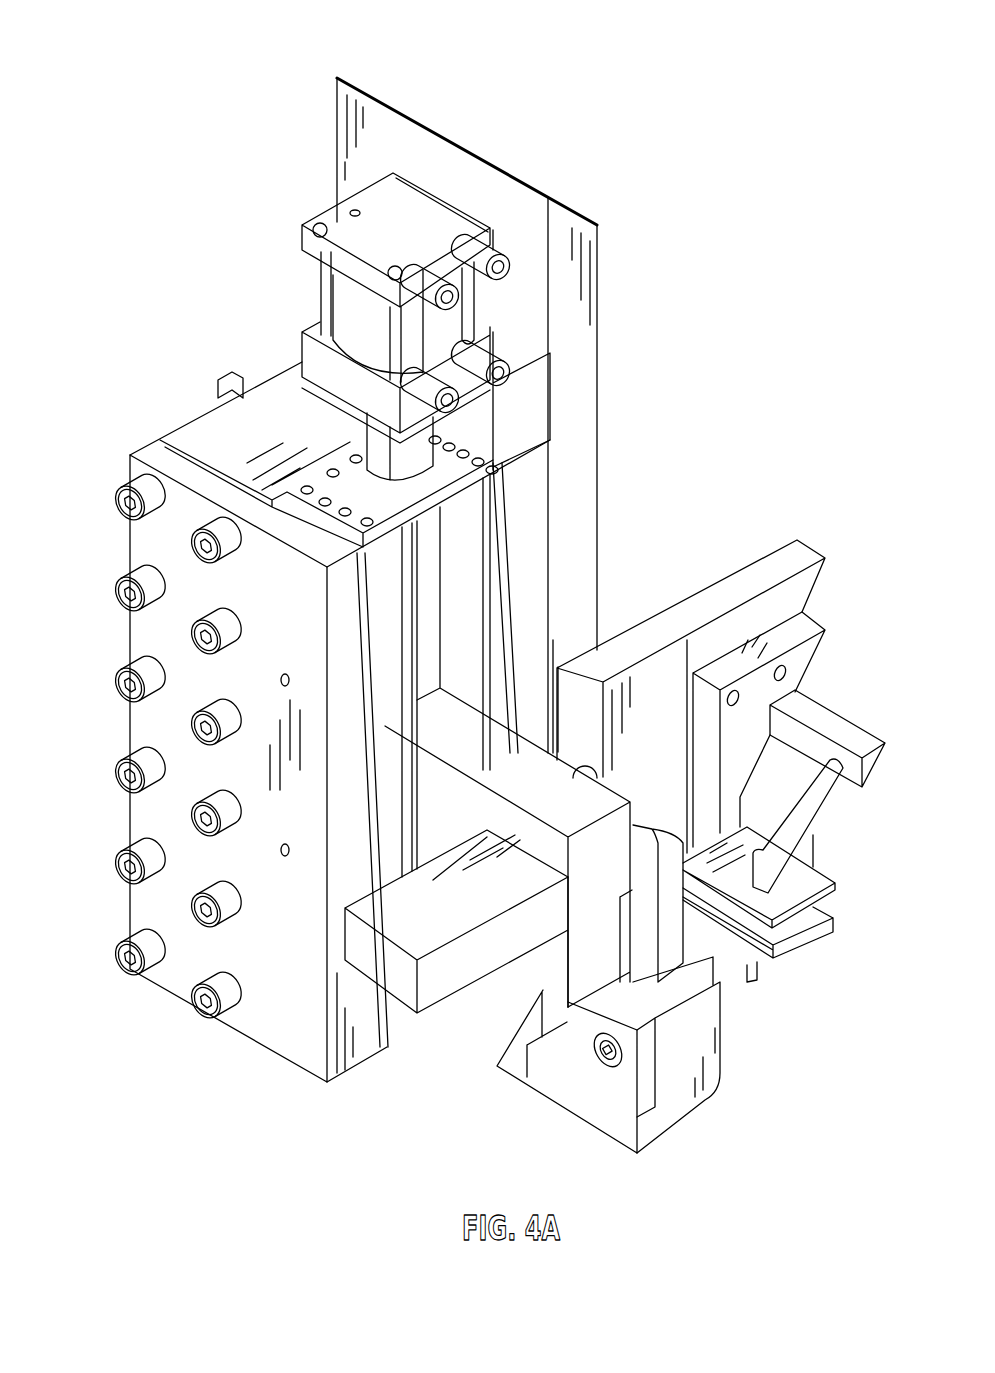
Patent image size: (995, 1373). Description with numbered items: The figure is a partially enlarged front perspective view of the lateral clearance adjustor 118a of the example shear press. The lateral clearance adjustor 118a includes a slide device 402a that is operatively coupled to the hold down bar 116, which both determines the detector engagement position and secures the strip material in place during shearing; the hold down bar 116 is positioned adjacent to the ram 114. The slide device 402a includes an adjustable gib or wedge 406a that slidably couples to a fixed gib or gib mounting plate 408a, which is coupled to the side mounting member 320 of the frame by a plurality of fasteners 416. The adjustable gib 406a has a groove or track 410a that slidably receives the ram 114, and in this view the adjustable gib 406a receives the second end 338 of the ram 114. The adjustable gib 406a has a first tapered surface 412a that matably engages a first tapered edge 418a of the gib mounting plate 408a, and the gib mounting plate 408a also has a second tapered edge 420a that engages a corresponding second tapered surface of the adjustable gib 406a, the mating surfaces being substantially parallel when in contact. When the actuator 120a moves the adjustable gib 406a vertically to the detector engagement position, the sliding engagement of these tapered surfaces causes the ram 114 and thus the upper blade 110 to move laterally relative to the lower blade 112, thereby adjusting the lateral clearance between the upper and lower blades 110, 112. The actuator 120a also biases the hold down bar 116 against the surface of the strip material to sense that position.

The lateral clearance adjustor 118a is at (245, 48).
The side mounting member 320 is at (337, 130).
The actuator 120a is at (320, 297).
The gib mounting plate 408a is at (137, 728).
The fasteners 416 is at (118, 503).
The first tapered edge 418a is at (370, 620).
The second tapered edge 420a is at (508, 478).
The groove or track 410a is at (383, 608).
The adjustable gib 406a is at (468, 528).
The slide device 402a is at (462, 627).
The first tapered surface 412a is at (377, 747).
The second end of the ram 338 is at (430, 813).
The hold down bar 116 is at (672, 910).
The upper blade 110 is at (628, 932).
The lower blade 112 is at (580, 1067).
The ram 114 is at (580, 903).